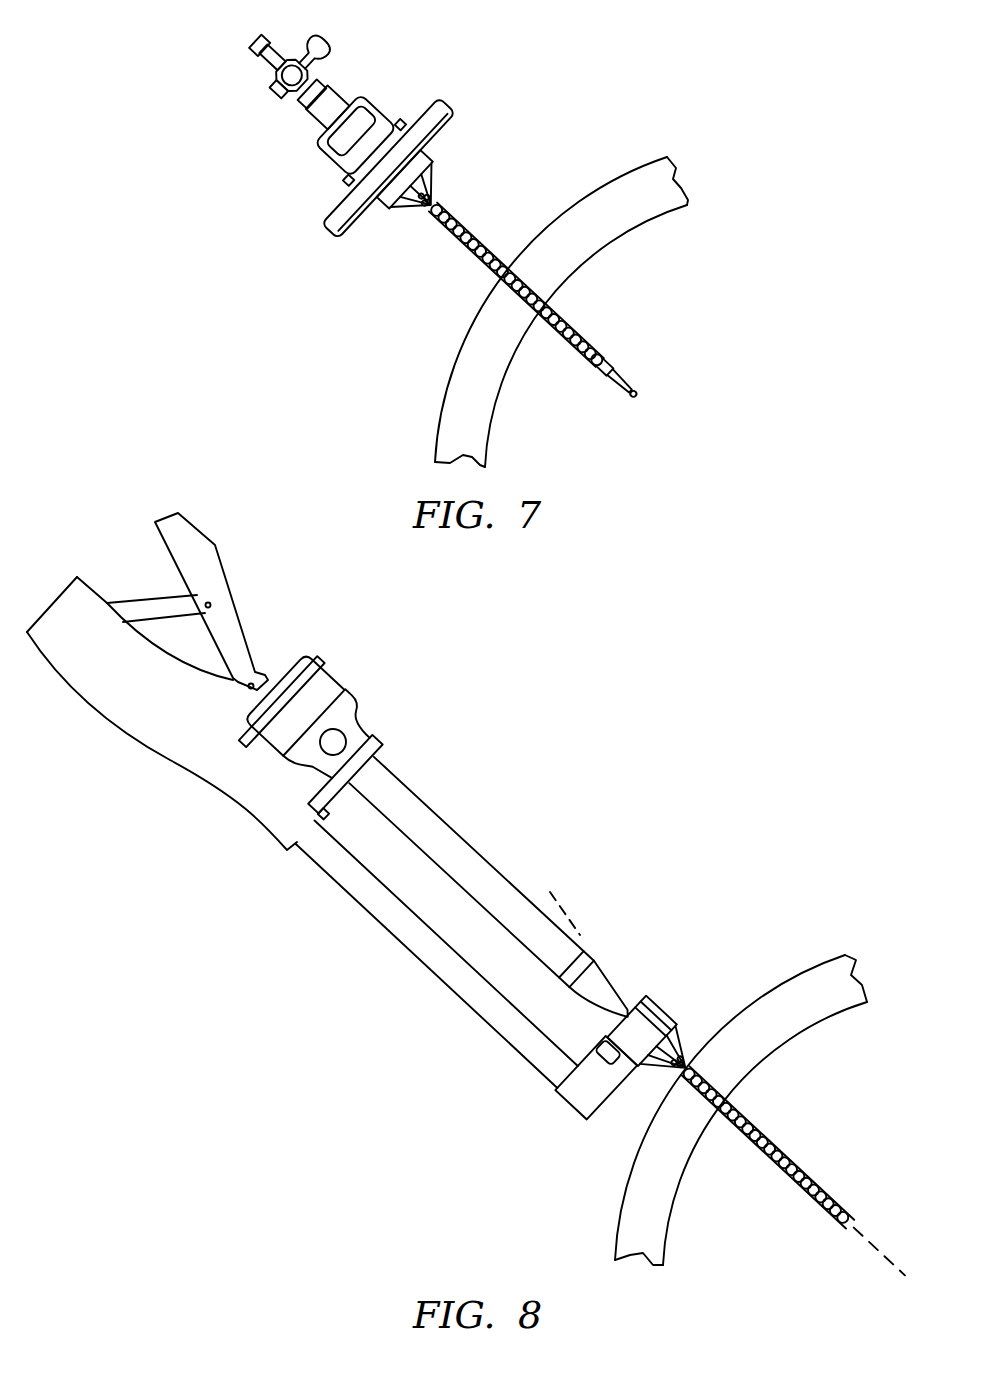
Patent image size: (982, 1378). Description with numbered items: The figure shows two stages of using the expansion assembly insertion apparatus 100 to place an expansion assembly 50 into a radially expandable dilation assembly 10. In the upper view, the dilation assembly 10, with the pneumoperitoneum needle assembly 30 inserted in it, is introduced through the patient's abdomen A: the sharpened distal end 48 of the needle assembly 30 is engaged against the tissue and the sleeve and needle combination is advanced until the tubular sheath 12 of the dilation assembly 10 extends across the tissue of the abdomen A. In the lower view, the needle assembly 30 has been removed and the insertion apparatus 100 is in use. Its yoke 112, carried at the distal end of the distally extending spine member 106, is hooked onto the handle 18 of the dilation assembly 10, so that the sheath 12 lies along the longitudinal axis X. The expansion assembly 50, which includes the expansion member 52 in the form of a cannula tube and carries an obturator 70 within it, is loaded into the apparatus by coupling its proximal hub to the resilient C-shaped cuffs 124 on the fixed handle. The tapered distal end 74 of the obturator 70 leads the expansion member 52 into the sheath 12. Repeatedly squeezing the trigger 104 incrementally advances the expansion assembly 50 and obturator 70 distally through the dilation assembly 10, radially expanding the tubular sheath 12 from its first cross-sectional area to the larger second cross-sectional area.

In FIG. 7, the pneumoperitoneum needle assembly 30 is at (404, 78).
In FIG. 7, the radially expandable dilation assembly 10 is at (471, 225).
In FIG. 8, the radially expandable dilation assembly 10 is at (745, 1137).
In FIG. 7, the tubular sheath 12 is at (474, 262).
In FIG. 8, the tubular sheath 12 is at (787, 1150).
In FIG. 7, the distal end of needle 48 is at (633, 390).
In FIG. 7, the patient's abdomen A is at (604, 178).
In FIG. 8, the patient's abdomen A is at (760, 995).
In FIG. 8, the trigger 104 is at (189, 532).
In FIG. 8, the C-shaped cuffs 124 is at (312, 660).
In FIG. 8, the obturator 70 is at (332, 690).
In FIG. 8, the expansion assembly 50 is at (350, 720).
In FIG. 8, the expansion assembly insertion apparatus 100 is at (222, 805).
In FIG. 8, the expansion member 52 is at (474, 855).
In FIG. 8, the spine member 106 is at (408, 940).
In FIG. 8, the tapered distal end 74 is at (625, 1012).
In FIG. 8, the handle 18 is at (662, 1000).
In FIG. 8, the yoke 112 is at (590, 1120).
In FIG. 8, the longitudinal axis X is at (878, 1252).